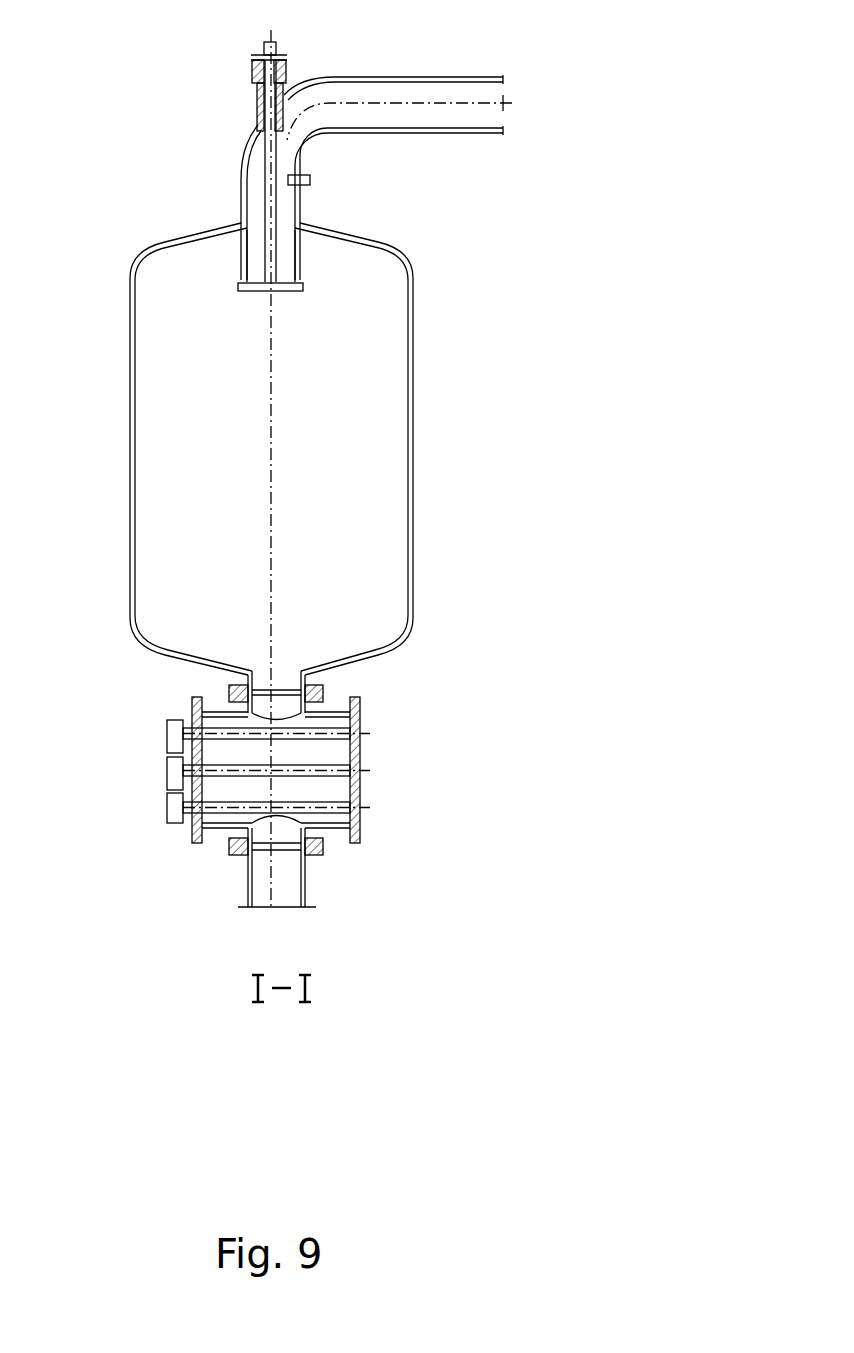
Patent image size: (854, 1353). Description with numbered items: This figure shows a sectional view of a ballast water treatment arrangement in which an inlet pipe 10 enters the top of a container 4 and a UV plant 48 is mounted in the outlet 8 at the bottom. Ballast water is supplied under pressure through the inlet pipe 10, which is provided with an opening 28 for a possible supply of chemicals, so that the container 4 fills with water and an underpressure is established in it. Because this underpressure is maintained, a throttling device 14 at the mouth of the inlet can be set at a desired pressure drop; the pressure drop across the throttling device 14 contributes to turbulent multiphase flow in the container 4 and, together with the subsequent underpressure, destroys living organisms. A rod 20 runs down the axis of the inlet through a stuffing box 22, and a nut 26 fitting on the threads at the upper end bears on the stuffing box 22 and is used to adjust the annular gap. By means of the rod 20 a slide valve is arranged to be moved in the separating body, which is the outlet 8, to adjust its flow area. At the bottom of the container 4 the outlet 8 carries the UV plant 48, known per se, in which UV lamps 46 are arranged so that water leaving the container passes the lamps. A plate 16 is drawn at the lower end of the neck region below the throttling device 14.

The container 4 is at (413, 340).
The outlet 8 is at (306, 873).
The inlet pipe 10 is at (403, 76).
The throttling device 14 is at (244, 264).
The plate 16 is at (248, 288).
The rod 20 is at (267, 150).
The stuffing box 22 is at (258, 103).
The nut 26 is at (253, 66).
The opening 28 is at (310, 180).
The UV lamps 46 is at (205, 735).
The UV plant 48 is at (355, 750).